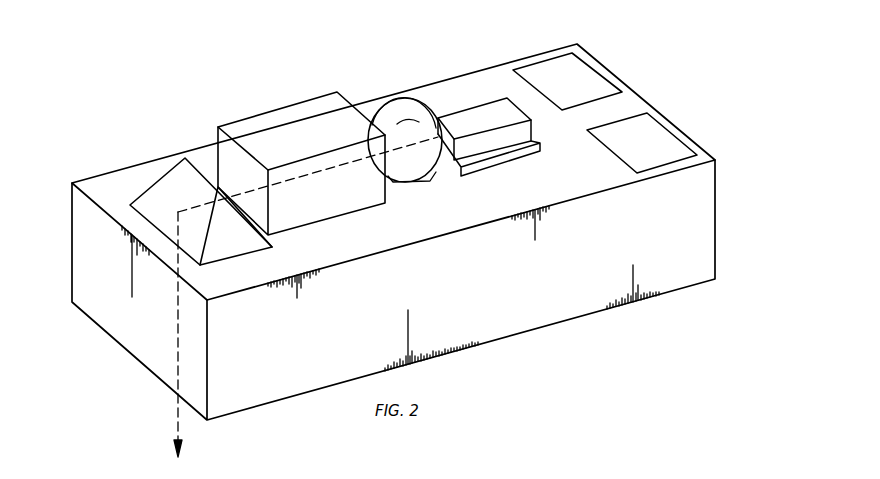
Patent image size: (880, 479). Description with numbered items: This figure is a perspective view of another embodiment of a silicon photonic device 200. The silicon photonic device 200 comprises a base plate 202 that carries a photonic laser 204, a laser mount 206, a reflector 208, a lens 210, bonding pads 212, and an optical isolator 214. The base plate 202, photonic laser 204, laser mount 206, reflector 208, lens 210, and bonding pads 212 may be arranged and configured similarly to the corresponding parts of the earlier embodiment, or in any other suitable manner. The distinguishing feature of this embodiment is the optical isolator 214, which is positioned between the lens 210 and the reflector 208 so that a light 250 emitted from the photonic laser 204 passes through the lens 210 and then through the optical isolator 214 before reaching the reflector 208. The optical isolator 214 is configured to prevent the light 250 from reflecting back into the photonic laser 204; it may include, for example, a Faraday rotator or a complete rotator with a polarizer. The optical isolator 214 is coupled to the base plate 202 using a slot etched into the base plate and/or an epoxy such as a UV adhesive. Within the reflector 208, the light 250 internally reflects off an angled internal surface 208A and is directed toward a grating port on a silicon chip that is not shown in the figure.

The silicon photonic device 200 is at (124, 49).
The base plate 202 is at (695, 223).
The photonic laser 204 is at (477, 115).
The laser mount 206 is at (502, 162).
The reflector 208 is at (232, 245).
The angled internal surface 208A is at (168, 190).
The lens 210 is at (393, 110).
The bonding pads 212 is at (580, 78).
The optical isolator 214 is at (295, 118).
The light 250 is at (293, 182).